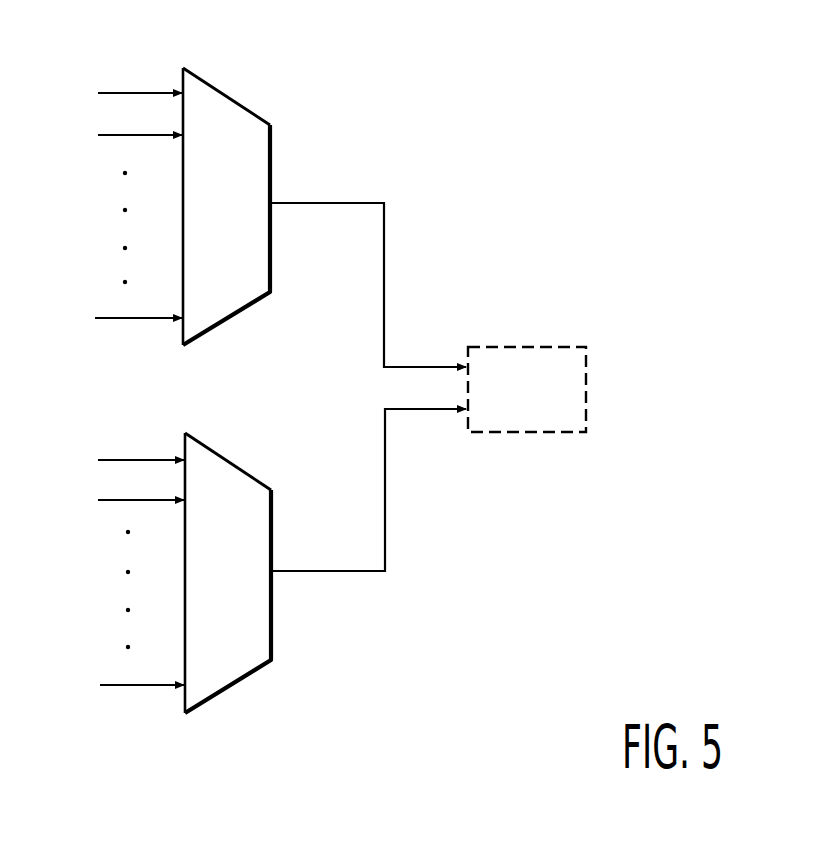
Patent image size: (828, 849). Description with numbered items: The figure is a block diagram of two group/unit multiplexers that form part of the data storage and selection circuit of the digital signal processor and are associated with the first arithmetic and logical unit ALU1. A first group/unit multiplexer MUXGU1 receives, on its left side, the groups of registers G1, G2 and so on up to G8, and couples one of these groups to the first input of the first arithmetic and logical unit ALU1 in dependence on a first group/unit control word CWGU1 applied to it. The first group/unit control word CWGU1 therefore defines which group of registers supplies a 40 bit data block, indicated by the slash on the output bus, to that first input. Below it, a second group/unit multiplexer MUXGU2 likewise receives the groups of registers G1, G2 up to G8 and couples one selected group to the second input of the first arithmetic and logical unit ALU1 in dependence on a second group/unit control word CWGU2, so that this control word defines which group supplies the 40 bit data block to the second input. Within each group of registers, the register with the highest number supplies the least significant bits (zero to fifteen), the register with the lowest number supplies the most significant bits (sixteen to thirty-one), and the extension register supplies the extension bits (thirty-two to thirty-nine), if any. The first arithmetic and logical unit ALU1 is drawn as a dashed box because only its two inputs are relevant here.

The 40 bit data block 40 is at (327, 212).
The first group/unit multiplexer MUXGU1 is at (243, 123).
The second group/unit multiplexer MUXGU2 is at (243, 491).
The first group/unit control word CWGU1 is at (212, 80).
The second group/unit control word CWGU2 is at (215, 447).
The first arithmetic and logical unit ALU1 is at (537, 362).
The group of registers G1 is at (119, 94).
The group of registers G2 is at (119, 136).
The group of registers G8 is at (119, 319).